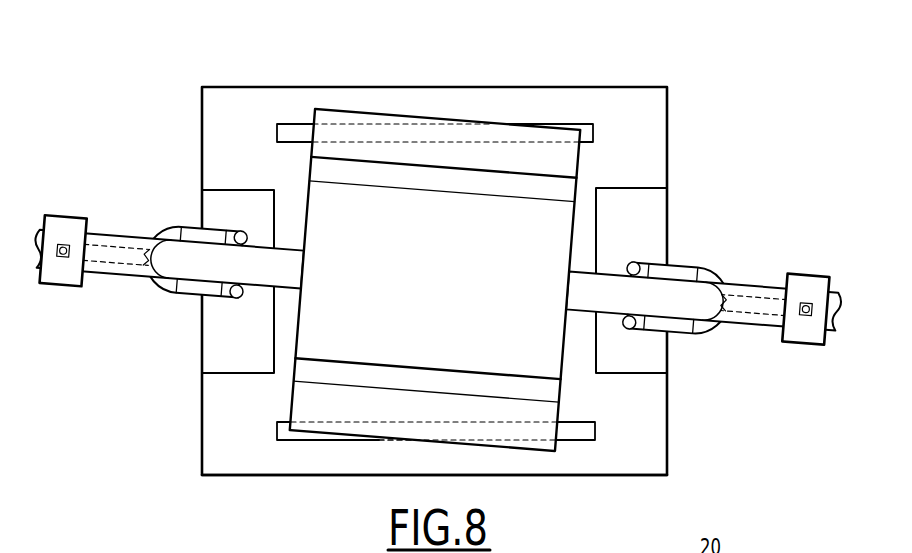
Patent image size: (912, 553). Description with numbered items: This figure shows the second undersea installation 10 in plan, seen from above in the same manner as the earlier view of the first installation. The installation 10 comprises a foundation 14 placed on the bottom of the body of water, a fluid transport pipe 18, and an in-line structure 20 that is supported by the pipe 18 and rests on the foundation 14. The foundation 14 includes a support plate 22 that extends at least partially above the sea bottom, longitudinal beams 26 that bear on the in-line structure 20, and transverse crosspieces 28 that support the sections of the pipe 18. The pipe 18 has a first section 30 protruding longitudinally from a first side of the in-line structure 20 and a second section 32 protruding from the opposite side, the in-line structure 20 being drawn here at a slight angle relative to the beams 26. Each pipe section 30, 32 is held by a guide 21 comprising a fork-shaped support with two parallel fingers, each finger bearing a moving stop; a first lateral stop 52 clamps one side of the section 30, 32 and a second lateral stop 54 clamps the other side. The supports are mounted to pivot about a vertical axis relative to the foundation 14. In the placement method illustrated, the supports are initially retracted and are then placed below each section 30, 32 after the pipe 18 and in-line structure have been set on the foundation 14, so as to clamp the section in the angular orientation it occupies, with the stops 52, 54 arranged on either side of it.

The undersea installation 10 is at (440, 274).
The foundation 14 is at (712, 457).
The fluid transport pipe 18 is at (138, 224).
The in-line structure 20 is at (483, 108).
The guide 21 is at (736, 243).
The support plate 22 is at (658, 127).
The longitudinal beams 26 is at (298, 134).
The transverse crosspieces 28 is at (215, 206).
The first section 30 is at (62, 236).
The second section 32 is at (812, 300).
The first lateral stop 52 is at (242, 232).
The second lateral stop 54 is at (237, 300).